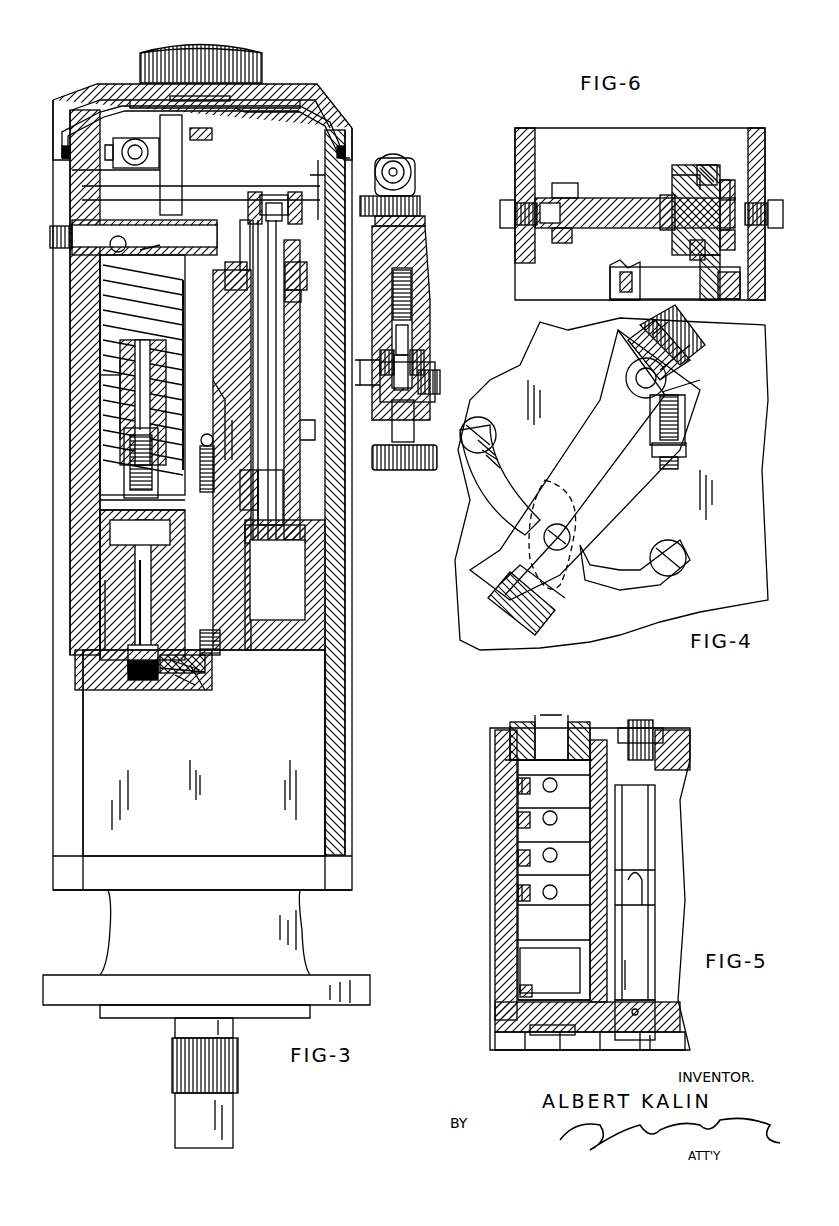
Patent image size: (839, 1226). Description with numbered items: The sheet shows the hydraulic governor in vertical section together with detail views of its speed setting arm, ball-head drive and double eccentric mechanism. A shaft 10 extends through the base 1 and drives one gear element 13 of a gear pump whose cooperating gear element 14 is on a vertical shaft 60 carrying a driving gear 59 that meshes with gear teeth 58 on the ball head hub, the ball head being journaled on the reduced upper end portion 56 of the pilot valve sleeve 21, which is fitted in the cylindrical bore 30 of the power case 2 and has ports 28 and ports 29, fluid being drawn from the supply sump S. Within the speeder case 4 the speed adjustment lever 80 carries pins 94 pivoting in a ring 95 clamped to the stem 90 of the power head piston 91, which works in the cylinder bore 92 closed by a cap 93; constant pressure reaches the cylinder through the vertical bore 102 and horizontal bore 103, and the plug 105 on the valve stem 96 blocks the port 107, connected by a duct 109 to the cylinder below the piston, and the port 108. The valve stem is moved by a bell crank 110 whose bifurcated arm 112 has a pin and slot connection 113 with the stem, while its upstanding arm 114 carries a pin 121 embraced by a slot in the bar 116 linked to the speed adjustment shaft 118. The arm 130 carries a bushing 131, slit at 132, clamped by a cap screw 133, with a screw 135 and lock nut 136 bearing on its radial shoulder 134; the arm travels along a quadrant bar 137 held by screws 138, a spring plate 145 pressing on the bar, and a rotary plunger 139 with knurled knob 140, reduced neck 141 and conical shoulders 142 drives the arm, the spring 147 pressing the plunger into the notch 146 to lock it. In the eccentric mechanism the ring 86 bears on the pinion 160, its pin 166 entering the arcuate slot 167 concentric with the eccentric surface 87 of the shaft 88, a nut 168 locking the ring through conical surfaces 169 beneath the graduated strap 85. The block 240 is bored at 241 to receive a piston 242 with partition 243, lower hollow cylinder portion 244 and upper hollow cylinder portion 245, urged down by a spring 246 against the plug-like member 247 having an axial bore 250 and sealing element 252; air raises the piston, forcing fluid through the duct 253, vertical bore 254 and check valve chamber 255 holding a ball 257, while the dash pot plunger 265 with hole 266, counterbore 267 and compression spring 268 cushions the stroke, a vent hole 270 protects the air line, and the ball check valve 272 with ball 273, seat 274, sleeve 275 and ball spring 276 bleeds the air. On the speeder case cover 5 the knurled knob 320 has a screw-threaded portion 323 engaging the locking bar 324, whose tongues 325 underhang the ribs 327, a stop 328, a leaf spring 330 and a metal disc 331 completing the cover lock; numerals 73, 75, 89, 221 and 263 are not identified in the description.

In FIG. 3, the base 1 is at (205, 948).
In FIG. 3, the power case 2 is at (185, 822).
In FIG. 5, the power case 2 is at (495, 888).
In FIG. 3, the speeder case 4 is at (70, 350).
In FIG. 6, the speeder case 4 is at (515, 165).
In FIG. 4, the speeder case 4 is at (740, 512).
In FIG. 3, the speeder case cover 5 is at (335, 92).
In FIG. 3, the shaft 10 is at (180, 1030).
In FIG. 5, the gear element 13 is at (578, 1050).
In FIG. 5, the gear element 14 is at (660, 1050).
In FIG. 5, the pilot valve sleeve 21 is at (530, 925).
In FIG. 5, the ports 28 is at (545, 855).
In FIG. 5, the ports 29 is at (545, 790).
In FIG. 5, the cylindrical bore 30 is at (520, 970).
In FIG. 5, the reduced upper end portion 56 is at (570, 722).
In FIG. 5, the gear teeth 58 is at (518, 728).
In FIG. 5, the driving gear 59 is at (660, 728).
In FIG. 5, the vertical shaft 60 is at (640, 928).
In FIG. 5, the lower seat 73 is at (530, 1002).
In FIG. 5, the seal ring 75 is at (520, 990).
In FIG. 3, the speed adjustment lever 80 is at (232, 262).
In FIG. 6, the speed adjustment lever 80 is at (625, 280).
In FIG. 6, the strap 85 is at (700, 165).
In FIG. 6, the ring 86 is at (728, 180).
In FIG. 6, the eccentric surface 87 is at (660, 228).
In FIG. 6, the shaft 88 is at (626, 194).
In FIG. 6, the end bolt 89 is at (503, 220).
In FIG. 3, the stem 90 is at (252, 360).
In FIG. 3, the power head piston 91 is at (270, 570).
In FIG. 3, the cylinder bore 92 is at (252, 612).
In FIG. 3, the cap 93 is at (312, 420).
In FIG. 3, the pins 94 is at (300, 262).
In FIG. 3, the ring 95 is at (294, 302).
In FIG. 3, the valve stem 96 is at (284, 344).
In FIG. 3, the vertical bore 102 is at (215, 610).
In FIG. 3, the horizontal bore 103 is at (224, 463).
In FIG. 3, the plug 105 is at (295, 520).
In FIG. 3, the port 107 is at (258, 490).
In FIG. 3, the port 108 is at (300, 536).
In FIG. 3, the duct 109 is at (262, 575).
In FIG. 3, the bell crank 110 is at (195, 193).
In FIG. 3, the bifurcated arm 112 is at (270, 195).
In FIG. 3, the pin and slot connection 113 is at (315, 190).
In FIG. 3, the upstanding arm 114 is at (180, 172).
In FIG. 3, the bar 116 is at (125, 160).
In FIG. 4, the speed adjustment shaft 118 is at (635, 382).
In FIG. 3, the pin 121 is at (72, 176).
In FIG. 3, the arm 130 is at (420, 265).
In FIG. 4, the arm 130 is at (595, 440).
In FIG. 3, the bushing 131 is at (415, 222).
In FIG. 4, the bushing 131 is at (625, 365).
In FIG. 4, the slit 132 is at (694, 370).
In FIG. 3, the cap screw 133 is at (400, 165).
In FIG. 4, the cap screw 133 is at (700, 352).
In FIG. 4, the radial shoulder 134 is at (700, 385).
In FIG. 4, the screw 135 is at (688, 422).
In FIG. 4, the lock nut 136 is at (690, 450).
In FIG. 3, the quadrant bar 137 is at (425, 380).
In FIG. 4, the quadrant bar 137 is at (502, 505).
In FIG. 4, the screws 138 is at (495, 440).
In FIG. 3, the rotary plunger 139 is at (408, 335).
In FIG. 3, the knurled knob 140 is at (405, 470).
In FIG. 4, the knurled knob 140 is at (550, 618).
In FIG. 3, the reduced neck 141 is at (410, 368).
In FIG. 3, the conical shoulders 142 is at (418, 350).
In FIG. 3, the spring plate 145 is at (372, 372).
In FIG. 4, the spring plate 145 is at (575, 508).
In FIG. 4, the notch 146 is at (625, 585).
In FIG. 3, the spring 147 is at (410, 300).
In FIG. 6, the pinion 160 is at (690, 170).
In FIG. 6, the pin 166 is at (712, 168).
In FIG. 6, the arcuate slot 167 is at (675, 178).
In FIG. 6, the nut 168 is at (740, 184).
In FIG. 6, the conical surfaces 169 is at (690, 248).
In FIG. 6, the clamp 221 is at (556, 243).
In FIG. 3, the block 240 is at (70, 304).
In FIG. 3, the cylinder bore 241 is at (100, 275).
In FIG. 3, the piston 242 is at (100, 514).
In FIG. 3, the partition 243 is at (100, 540).
In FIG. 3, the hollow cylinder portion 244 is at (105, 588).
In FIG. 3, the hollow cylinder portion 245 is at (120, 376).
In FIG. 3, the spring 246 is at (70, 328).
In FIG. 3, the plug-like member 247 is at (135, 620).
In FIG. 3, the axial bore 250 is at (140, 644).
In FIG. 3, the sealing element 252 is at (100, 565).
In FIG. 3, the duct 253 is at (175, 235).
In FIG. 3, the vertical bore 254 is at (253, 345).
In FIG. 3, the check valve chamber 255 is at (236, 425).
In FIG. 3, the ball 257 is at (225, 405).
In FIG. 3, the yoke block 263 is at (115, 235).
In FIG. 3, the dash pot plunger 265 is at (120, 398).
In FIG. 3, the hole 266 is at (100, 420).
In FIG. 3, the counterbore 267 is at (130, 443).
In FIG. 3, the compression spring 268 is at (124, 465).
In FIG. 3, the vent hole 270 is at (78, 680).
In FIG. 3, the ball check valve 272 is at (195, 680).
In FIG. 3, the ball 273 is at (170, 685).
In FIG. 3, the seat 274 is at (195, 690).
In FIG. 3, the sleeve 275 is at (205, 665).
In FIG. 3, the ball spring 276 is at (190, 685).
In FIG. 3, the knurled knob 320 is at (215, 48).
In FIG. 3, the screw-threaded portion 323 is at (225, 136).
In FIG. 3, the locking bar 324 is at (100, 108).
In FIG. 3, the tongues 325 is at (62, 150).
In FIG. 3, the ribs 327 is at (55, 132).
In FIG. 3, the stop 328 is at (135, 97).
In FIG. 3, the leaf spring 330 is at (235, 98).
In FIG. 3, the metal disc 331 is at (305, 112).
In FIG. 5, the supply sump S is at (518, 786).